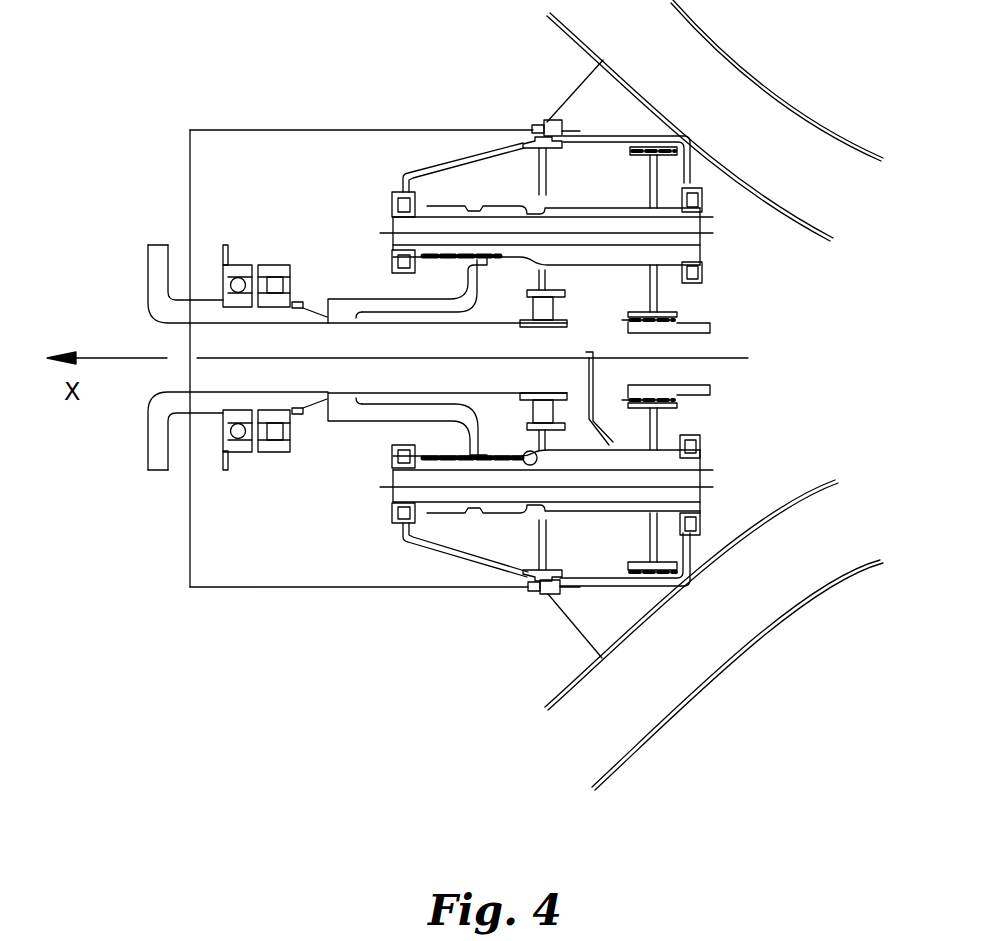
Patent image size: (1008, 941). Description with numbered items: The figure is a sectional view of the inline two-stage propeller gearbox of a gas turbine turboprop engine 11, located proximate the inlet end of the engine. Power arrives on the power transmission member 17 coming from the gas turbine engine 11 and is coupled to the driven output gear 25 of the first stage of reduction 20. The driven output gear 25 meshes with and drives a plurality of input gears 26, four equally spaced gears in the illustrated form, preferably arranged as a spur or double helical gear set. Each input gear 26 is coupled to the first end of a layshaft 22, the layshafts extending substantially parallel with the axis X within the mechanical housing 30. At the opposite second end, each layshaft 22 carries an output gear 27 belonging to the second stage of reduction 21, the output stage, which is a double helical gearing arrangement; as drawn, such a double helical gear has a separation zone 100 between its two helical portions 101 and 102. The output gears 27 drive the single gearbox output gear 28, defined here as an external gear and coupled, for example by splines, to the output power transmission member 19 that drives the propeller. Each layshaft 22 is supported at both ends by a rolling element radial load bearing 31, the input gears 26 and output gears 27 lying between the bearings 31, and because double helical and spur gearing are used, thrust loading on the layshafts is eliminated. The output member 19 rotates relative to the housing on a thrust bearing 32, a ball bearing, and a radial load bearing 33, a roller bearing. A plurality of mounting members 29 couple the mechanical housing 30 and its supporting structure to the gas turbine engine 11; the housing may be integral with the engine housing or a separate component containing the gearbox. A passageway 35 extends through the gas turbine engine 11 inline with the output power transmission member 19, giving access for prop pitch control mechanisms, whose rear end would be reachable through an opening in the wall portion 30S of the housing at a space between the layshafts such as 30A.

The gas turbine turboprop engine 11 is at (772, 618).
The power transmission member 17 is at (708, 392).
The output power transmission member 19 is at (203, 405).
The first stage of reduction 20 is at (727, 322).
The second stage of reduction 21 is at (462, 189).
The layshaft 22 is at (590, 205).
The driven output gear 25 is at (652, 324).
The input gear 26 is at (655, 290).
The output gear 27 is at (435, 250).
The gearbox output gear 28 is at (430, 418).
The mounting member 29 is at (602, 652).
The mechanical housing 30 is at (217, 587).
The space between the layshafts 30A is at (600, 432).
The portion of the housing 30S is at (615, 140).
The bearing 31 is at (397, 190).
The thrust bearing 32 is at (237, 268).
The radial load bearing 33 is at (275, 442).
The passageway 35 is at (458, 352).
The separation zone 100 is at (480, 467).
The helical portion 101 is at (392, 443).
The helical portion 102 is at (536, 466).